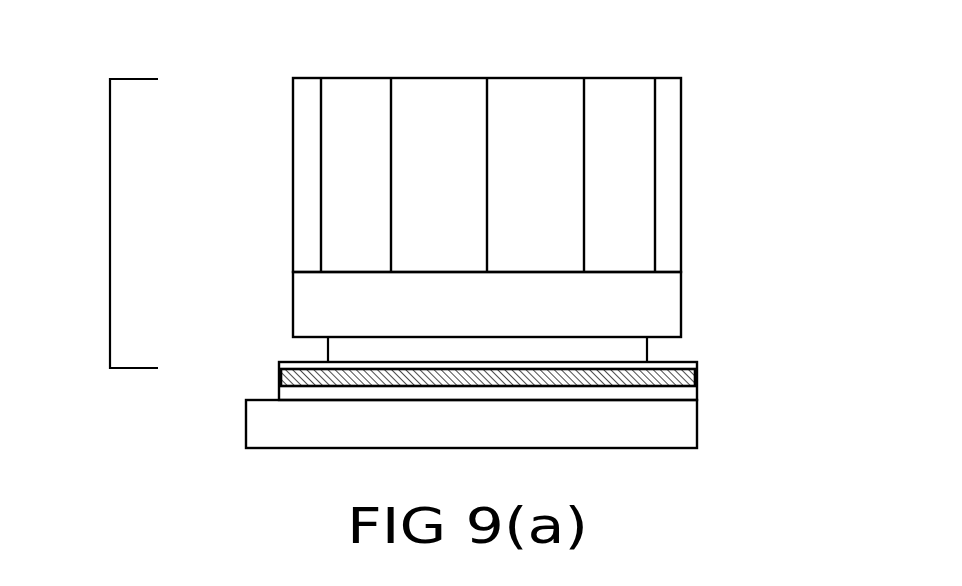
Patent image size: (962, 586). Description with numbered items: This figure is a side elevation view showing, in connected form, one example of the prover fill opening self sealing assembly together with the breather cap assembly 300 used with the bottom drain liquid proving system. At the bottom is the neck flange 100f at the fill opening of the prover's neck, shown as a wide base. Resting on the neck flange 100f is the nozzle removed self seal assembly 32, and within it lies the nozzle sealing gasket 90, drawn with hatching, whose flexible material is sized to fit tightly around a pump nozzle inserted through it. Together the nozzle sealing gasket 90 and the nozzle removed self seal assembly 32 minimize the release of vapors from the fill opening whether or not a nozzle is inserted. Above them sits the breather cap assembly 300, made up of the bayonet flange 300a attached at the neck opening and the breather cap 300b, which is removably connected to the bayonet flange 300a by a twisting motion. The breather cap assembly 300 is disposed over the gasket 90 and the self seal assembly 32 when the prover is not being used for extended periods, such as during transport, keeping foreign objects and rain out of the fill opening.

The breather cap assembly 300 is at (110, 223).
The breather cap 300b is at (668, 178).
The bayonet flange 300a is at (635, 344).
The nozzle removed self seal assembly 32 is at (702, 393).
The nozzle sealing gasket 90 is at (279, 371).
The neck flange 100f is at (692, 440).